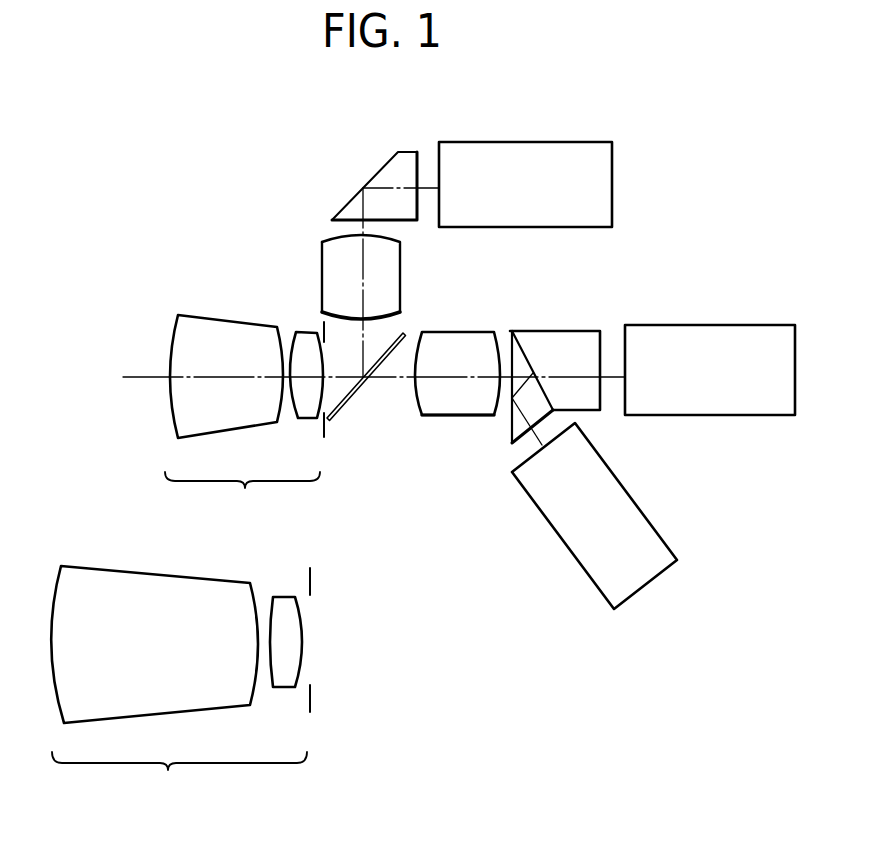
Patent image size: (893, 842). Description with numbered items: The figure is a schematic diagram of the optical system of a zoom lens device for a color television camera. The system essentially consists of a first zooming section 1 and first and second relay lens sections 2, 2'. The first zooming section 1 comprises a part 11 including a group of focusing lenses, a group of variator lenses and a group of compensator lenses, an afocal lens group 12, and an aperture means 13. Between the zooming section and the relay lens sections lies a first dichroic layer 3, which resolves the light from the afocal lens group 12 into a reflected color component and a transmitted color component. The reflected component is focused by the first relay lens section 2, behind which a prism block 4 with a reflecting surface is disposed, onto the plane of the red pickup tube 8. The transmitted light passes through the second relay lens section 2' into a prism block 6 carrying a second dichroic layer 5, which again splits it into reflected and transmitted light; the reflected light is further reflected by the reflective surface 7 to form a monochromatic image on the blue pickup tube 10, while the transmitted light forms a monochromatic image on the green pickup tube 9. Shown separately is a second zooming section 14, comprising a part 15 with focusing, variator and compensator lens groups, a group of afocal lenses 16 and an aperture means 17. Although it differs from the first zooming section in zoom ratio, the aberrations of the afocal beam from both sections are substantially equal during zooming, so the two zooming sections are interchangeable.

The first zooming section 1 is at (242, 495).
The first relay lens section 2 is at (383, 277).
The second relay lens section 2' is at (457, 345).
The first dichroic layer 3 is at (355, 395).
The prism block 4 is at (377, 172).
The second dichroic layer 5 is at (527, 350).
The prism block 6 is at (568, 331).
The reflective surface 7 is at (510, 433).
The red pickup tube 8 is at (517, 142).
The green pickup tube 9 is at (695, 325).
The blue pickup tube 10 is at (623, 482).
The part including focusing, variator and compensator lens groups 11 is at (210, 433).
The afocal lens group 12 is at (302, 422).
The aperture means 13 is at (327, 433).
The second zooming section 14 is at (179, 777).
The part including focusing, variator and compensator lens groups 15 is at (193, 713).
The afocal lens group 16 is at (282, 688).
The aperture means 17 is at (312, 578).